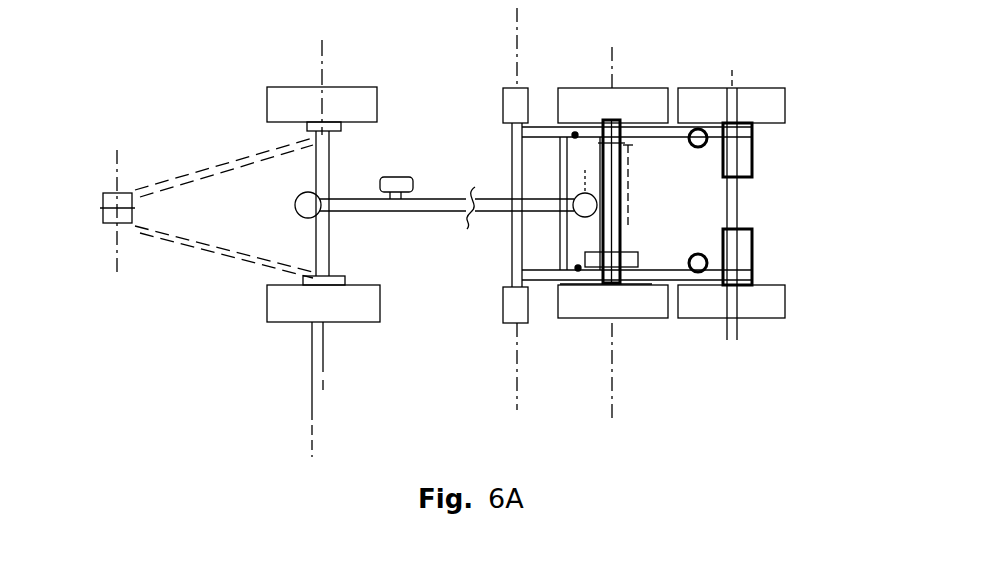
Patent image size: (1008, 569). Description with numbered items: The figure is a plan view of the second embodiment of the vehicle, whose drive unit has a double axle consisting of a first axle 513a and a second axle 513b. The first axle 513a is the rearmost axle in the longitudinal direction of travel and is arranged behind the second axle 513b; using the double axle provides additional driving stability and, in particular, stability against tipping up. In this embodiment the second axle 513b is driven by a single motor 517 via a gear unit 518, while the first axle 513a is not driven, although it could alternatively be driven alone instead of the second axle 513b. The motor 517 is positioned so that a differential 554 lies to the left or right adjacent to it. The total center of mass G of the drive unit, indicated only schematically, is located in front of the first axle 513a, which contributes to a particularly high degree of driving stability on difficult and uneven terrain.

The second axle 513b is at (613, 97).
The first axle 513a is at (733, 98).
The motor 517 is at (628, 190).
The total center of mass G is at (583, 218).
The differential 554 is at (590, 270).
The gear unit 518 is at (637, 281).